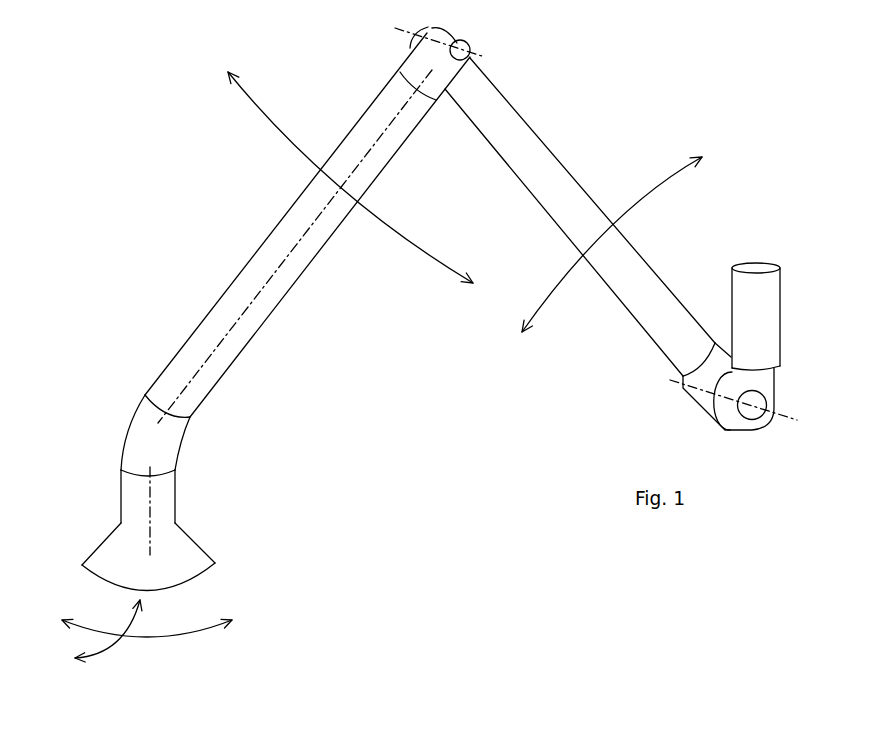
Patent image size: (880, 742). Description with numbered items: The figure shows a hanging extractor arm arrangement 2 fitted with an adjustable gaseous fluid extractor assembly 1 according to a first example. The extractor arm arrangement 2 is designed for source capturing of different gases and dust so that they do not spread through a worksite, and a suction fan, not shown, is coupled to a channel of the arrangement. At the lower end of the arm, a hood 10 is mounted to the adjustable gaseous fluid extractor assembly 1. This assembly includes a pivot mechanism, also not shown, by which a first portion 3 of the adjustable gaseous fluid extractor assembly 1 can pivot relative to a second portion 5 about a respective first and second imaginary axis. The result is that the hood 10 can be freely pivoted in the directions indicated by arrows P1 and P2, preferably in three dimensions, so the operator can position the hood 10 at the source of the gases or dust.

The adjustable gaseous fluid extractor assembly 1 is at (132, 427).
The extractor arm arrangement 2 is at (364, 345).
The first portion 3 is at (115, 462).
The second portion 5 is at (125, 405).
The hood 10 is at (198, 538).
The arrow P1 is at (178, 638).
The arrow P2 is at (100, 683).